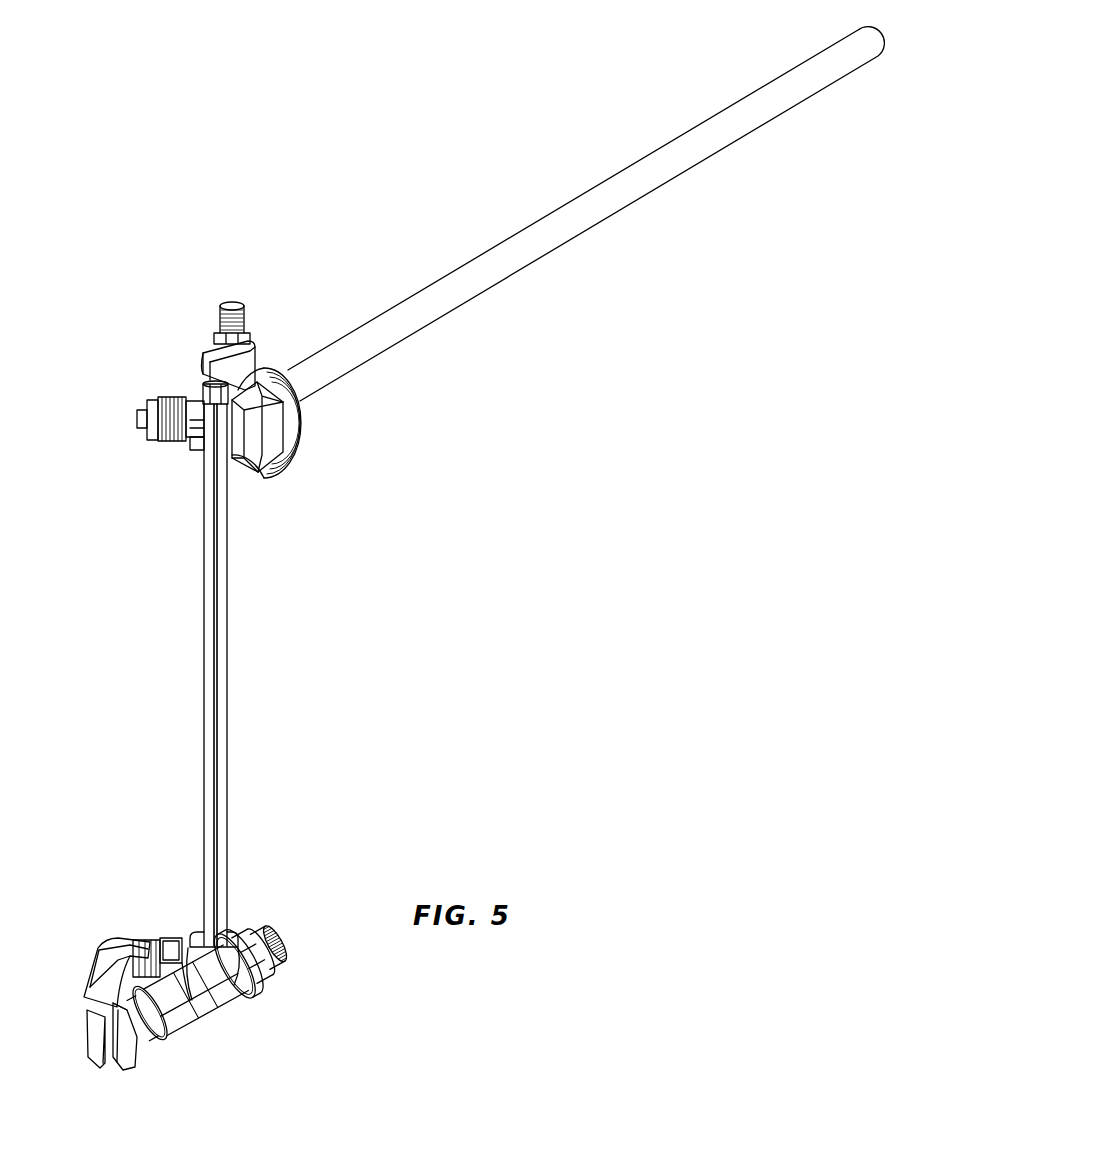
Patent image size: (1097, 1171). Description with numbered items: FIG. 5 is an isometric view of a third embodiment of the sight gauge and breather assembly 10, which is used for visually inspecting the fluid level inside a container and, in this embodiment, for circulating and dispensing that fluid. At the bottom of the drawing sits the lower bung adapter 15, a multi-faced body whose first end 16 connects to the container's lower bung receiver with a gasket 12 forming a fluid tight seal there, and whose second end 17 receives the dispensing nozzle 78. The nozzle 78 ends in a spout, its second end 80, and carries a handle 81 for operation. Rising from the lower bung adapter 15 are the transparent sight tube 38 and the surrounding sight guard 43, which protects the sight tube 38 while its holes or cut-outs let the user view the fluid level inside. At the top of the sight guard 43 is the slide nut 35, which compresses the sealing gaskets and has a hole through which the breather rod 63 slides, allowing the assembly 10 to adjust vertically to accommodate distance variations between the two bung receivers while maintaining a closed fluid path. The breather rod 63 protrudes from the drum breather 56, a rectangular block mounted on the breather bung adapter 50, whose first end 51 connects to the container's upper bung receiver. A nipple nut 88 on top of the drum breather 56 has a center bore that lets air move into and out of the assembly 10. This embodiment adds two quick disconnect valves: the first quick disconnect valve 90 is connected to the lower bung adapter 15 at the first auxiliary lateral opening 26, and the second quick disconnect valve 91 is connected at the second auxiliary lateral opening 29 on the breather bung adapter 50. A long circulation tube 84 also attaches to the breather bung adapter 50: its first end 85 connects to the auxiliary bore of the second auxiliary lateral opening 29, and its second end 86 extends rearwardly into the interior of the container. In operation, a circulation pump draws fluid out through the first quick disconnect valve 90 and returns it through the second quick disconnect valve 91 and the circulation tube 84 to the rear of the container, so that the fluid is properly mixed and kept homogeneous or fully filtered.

The sight gauge and breather assembly 10 is at (417, 628).
The gasket 12 is at (298, 440).
The lower bung adapter 15 is at (240, 990).
The first end of lower bung adapter 16 is at (285, 930).
The second end of lower bung adapter 17 is at (230, 1003).
The first auxiliary lateral opening 26 is at (196, 447).
The second auxiliary lateral opening 29 is at (200, 930).
The slide nut 35 is at (196, 426).
The sight tube 38 is at (204, 566).
The sight guard 43 is at (223, 663).
The breather bung adapter 50 is at (255, 470).
The first end of breather bung adapter 51 is at (300, 412).
The drum breather 56 is at (210, 353).
The breather rod 63 is at (205, 384).
The dispensing nozzle 78 is at (170, 1030).
The second end of nozzle 80 is at (124, 1062).
The handle 81 is at (100, 990).
The circulation tube 84 is at (588, 218).
The first end of circulation tube 85 is at (310, 365).
The second end of circulation tube 86 is at (785, 103).
The nipple nut 88 is at (222, 318).
The first quick disconnect valve 90 is at (150, 938).
The second quick disconnect valve 91 is at (150, 408).